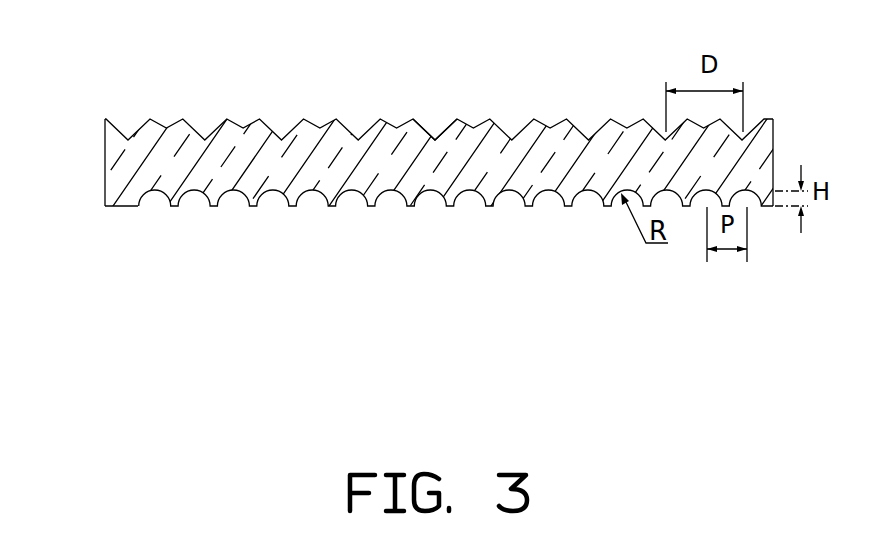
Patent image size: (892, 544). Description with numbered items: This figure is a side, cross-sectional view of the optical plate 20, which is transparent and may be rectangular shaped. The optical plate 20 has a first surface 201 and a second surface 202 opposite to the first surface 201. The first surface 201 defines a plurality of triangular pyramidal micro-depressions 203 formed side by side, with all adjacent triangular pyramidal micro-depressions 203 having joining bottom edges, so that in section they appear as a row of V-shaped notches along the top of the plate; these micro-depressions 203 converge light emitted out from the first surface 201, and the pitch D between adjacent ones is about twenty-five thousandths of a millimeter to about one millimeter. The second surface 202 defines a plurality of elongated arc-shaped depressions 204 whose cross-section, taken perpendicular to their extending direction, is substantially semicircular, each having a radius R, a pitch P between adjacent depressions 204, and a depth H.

The optical plate 20 is at (437, 139).
The first surface 201 is at (167, 119).
The second surface 202 is at (133, 206).
The triangular pyramidal micro-depression 203 is at (436, 119).
The elongated arc-shaped depression 204 is at (390, 193).